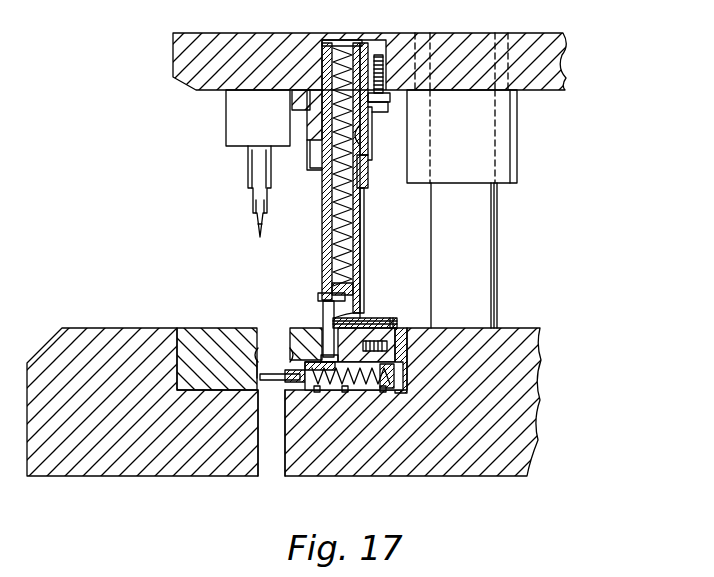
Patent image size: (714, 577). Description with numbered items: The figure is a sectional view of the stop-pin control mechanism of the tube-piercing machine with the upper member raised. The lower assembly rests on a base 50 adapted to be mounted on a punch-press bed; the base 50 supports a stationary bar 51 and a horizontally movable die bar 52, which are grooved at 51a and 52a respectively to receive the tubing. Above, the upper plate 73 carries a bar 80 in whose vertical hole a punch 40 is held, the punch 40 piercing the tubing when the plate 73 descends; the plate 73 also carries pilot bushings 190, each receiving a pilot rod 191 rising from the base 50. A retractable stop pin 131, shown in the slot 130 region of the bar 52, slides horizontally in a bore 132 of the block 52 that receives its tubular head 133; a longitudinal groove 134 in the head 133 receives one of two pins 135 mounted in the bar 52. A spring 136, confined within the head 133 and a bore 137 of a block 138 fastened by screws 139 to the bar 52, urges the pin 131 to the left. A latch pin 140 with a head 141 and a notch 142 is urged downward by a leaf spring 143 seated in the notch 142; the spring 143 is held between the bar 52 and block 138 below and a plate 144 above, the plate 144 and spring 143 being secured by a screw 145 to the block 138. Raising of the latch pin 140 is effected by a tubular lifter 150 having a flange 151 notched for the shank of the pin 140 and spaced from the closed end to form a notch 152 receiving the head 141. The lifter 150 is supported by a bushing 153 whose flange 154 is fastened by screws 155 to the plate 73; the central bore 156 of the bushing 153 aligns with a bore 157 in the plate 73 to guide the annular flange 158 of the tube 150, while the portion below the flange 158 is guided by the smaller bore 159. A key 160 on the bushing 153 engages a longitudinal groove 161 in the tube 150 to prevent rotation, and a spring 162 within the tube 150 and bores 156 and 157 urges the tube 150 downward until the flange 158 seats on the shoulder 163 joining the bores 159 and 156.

The punch 40 is at (248, 195).
The base 50 is at (541, 407).
The stationary bar 51 is at (233, 328).
The groove 51a is at (257, 368).
The movable bar 52 is at (290, 328).
The groove 52a is at (280, 363).
The upper plate 73 is at (173, 50).
The bar 80 is at (226, 128).
The slot 130 is at (272, 466).
The stop pin 131 is at (288, 384).
The bore 132 is at (352, 392).
The tubular head 133 is at (322, 390).
The longitudinal groove 134 is at (316, 392).
The pin 135 is at (345, 392).
The spring 136 is at (350, 390).
The bore 137 is at (386, 390).
The block 138 is at (407, 370).
The screw 139 is at (388, 348).
The latch pin 140 is at (323, 312).
The head 141 is at (318, 297).
The notch 142 is at (360, 318).
The leaf spring 143 is at (370, 320).
The plate 144 is at (380, 322).
The screw 145 is at (393, 323).
The lifter tube 150 is at (322, 243).
The flange 151 is at (345, 318).
The notch 152 is at (332, 288).
The bushing 153 is at (368, 128).
The flange 154 is at (392, 97).
The screw 155 is at (388, 108).
The central bore 156 is at (361, 140).
The bore 157 is at (379, 55).
The annular flange 158 is at (316, 150).
The bore 159 is at (312, 180).
The key 160 is at (368, 173).
The longitudinal groove 161 is at (364, 209).
The spring 162 is at (344, 40).
The shoulder 163 is at (318, 172).
The pilot bushing 190 is at (519, 128).
The pilot rod 191 is at (498, 210).